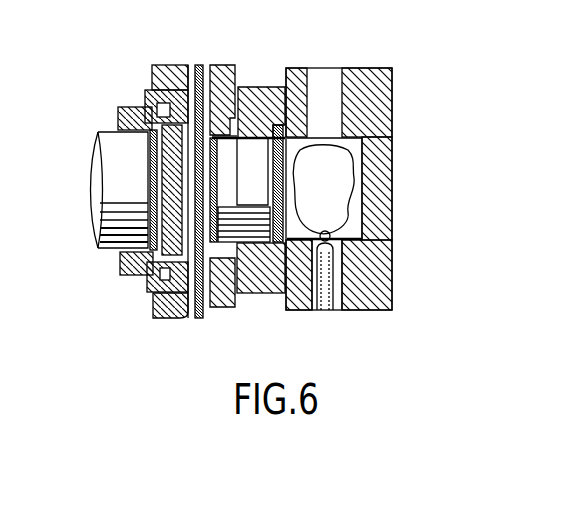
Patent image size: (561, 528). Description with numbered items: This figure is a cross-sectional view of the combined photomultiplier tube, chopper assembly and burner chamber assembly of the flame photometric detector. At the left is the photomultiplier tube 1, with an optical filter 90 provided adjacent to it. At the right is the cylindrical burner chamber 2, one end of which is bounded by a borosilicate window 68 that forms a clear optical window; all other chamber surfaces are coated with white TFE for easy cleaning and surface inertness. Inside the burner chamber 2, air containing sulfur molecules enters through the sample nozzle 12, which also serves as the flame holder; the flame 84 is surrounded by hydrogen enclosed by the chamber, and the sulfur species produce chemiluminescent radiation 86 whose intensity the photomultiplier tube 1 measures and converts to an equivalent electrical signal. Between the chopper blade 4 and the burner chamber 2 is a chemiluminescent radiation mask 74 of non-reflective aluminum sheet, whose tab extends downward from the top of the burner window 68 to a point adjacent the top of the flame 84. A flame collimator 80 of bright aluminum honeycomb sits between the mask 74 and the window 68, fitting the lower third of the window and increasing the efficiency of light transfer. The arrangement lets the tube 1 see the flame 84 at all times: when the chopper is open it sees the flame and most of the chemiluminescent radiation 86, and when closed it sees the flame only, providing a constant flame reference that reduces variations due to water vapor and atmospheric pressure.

The photomultiplier tube 1 is at (98, 152).
The optical filter 90 is at (151, 112).
The chopper blade 4 is at (197, 65).
The borosilicate window 68 is at (267, 95).
The chemiluminescent radiation mask 74 is at (222, 165).
The flame collimator 80 is at (247, 248).
The burner chamber 2 is at (378, 78).
The chemiluminescent radiation 86 is at (357, 167).
The flame 84 is at (330, 233).
The sample nozzle 12 is at (337, 268).